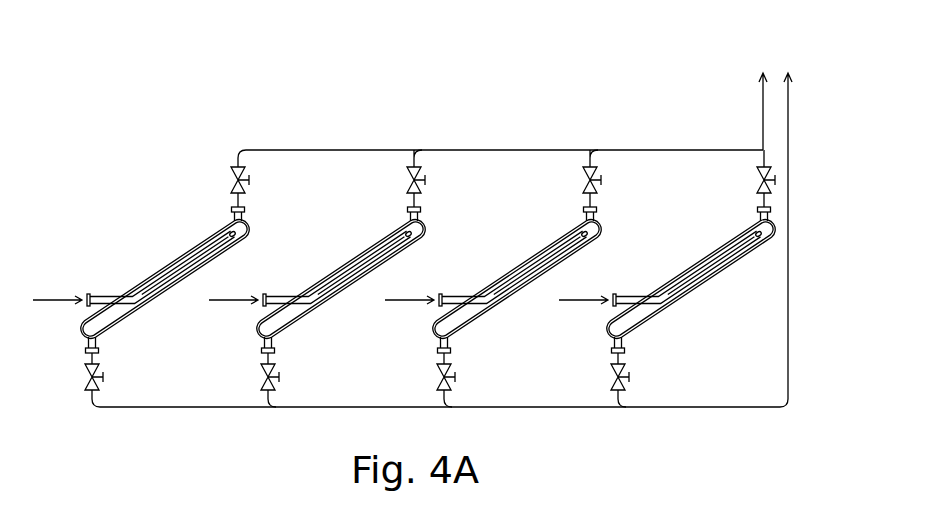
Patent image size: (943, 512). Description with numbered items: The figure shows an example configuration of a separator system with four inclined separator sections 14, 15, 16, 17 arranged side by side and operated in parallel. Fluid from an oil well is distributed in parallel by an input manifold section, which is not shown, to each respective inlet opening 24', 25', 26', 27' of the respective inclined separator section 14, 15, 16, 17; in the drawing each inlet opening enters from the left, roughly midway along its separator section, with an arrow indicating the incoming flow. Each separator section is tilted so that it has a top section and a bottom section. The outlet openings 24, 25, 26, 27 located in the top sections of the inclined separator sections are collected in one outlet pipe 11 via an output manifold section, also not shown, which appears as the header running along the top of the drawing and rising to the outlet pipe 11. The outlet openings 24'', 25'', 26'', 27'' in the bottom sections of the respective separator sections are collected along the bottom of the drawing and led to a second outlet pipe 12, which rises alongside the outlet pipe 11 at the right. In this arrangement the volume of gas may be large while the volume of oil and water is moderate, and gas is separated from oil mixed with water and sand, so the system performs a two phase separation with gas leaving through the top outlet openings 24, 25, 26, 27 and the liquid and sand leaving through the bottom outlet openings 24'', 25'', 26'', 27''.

The outlet pipe 11 is at (760, 100).
The second outlet pipe 12 is at (789, 100).
The inclined separator section 14 is at (165, 264).
The inclined separator section 15 is at (341, 262).
The inclined separator section 16 is at (517, 264).
The inclined separator section 17 is at (691, 260).
The outlet opening 24 is at (204, 163).
The outlet opening 25 is at (376, 158).
The outlet opening 26 is at (551, 156).
The outlet opening 27 is at (723, 156).
The inlet opening 24' is at (134, 257).
The inlet opening 25' is at (310, 258).
The inlet opening 26' is at (486, 258).
The inlet opening 27' is at (660, 255).
The outlet opening 24'' is at (57, 385).
The outlet opening 25'' is at (222, 380).
The outlet opening 26'' is at (400, 380).
The outlet opening 27'' is at (574, 380).